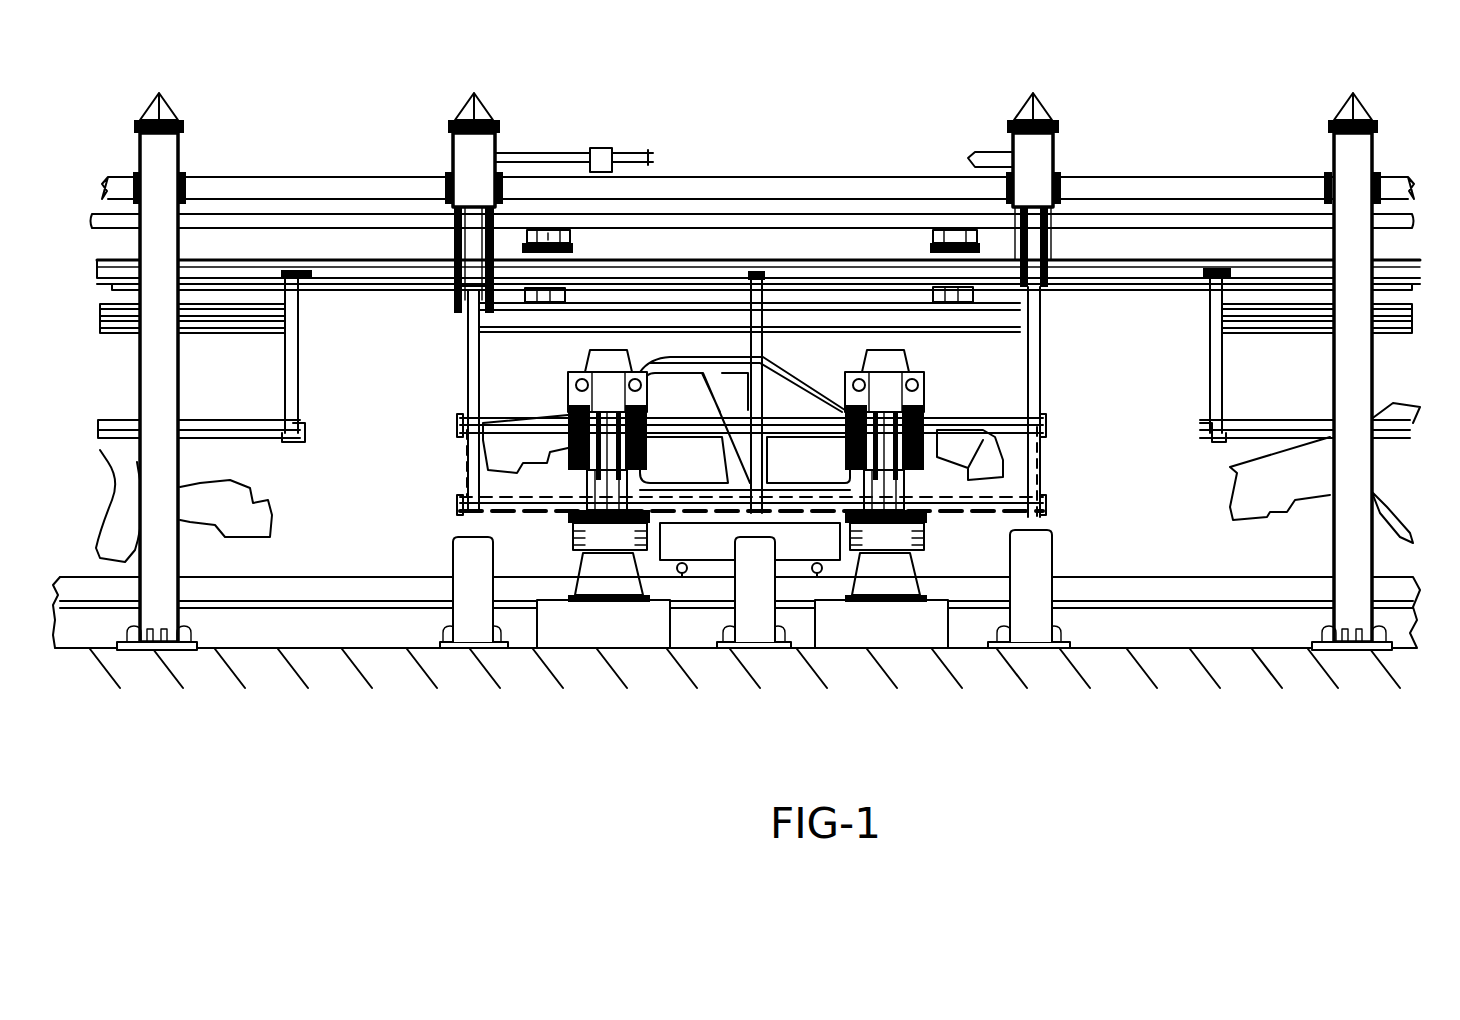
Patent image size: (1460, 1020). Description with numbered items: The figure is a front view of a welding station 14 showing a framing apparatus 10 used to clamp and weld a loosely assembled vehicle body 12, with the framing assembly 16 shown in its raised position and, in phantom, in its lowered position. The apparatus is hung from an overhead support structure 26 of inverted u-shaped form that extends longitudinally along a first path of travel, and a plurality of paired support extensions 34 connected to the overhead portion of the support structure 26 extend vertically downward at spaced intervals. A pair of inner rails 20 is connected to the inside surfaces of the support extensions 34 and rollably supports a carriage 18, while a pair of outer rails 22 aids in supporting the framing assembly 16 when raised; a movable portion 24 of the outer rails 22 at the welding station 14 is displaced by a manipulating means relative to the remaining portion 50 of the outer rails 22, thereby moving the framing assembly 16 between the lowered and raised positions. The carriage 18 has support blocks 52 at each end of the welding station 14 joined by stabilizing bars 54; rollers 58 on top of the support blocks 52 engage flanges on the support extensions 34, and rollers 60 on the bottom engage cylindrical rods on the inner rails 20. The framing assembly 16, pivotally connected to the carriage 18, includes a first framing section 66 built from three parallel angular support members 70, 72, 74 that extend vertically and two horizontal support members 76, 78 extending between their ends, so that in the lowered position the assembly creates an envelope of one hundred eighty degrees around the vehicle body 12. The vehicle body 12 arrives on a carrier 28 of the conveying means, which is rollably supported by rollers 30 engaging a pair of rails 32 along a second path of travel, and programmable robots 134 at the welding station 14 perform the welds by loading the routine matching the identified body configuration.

The framing apparatus 10 is at (890, 117).
The vehicle body 12 is at (504, 414).
The welding station 14 is at (540, 541).
The framing assembly 16 is at (1047, 367).
The carriage 18 is at (586, 250).
The inner rails 20 is at (660, 262).
The outer rails 22 is at (698, 274).
The movable portion of the outer rails 24 is at (865, 282).
The overhead support structure 26 is at (1130, 177).
The carrier 28 is at (717, 547).
The rollers 30 is at (683, 577).
The rails 32 is at (982, 593).
The support extensions 34 is at (449, 246).
The remaining portion of the outer rails 50 is at (313, 282).
The support blocks 52 is at (577, 230).
The stabilizing bars 54 is at (800, 228).
The rollers 58 is at (545, 230).
The rollers 60 is at (528, 262).
The first framing section 66 is at (1045, 403).
The angular support member 70 is at (465, 345).
The angular support member 72 is at (750, 345).
The angular support member 74 is at (1037, 360).
The horizontal support member 76 is at (940, 425).
The horizontal support member 78 is at (940, 318).
The programmable robots 134 is at (903, 562).